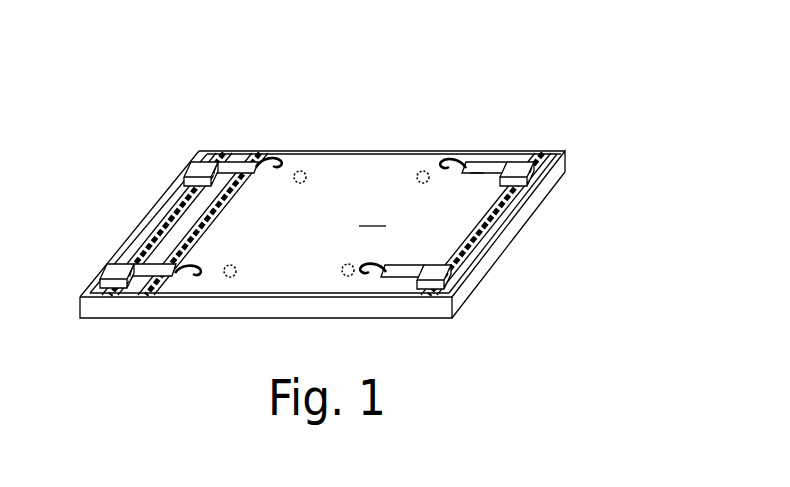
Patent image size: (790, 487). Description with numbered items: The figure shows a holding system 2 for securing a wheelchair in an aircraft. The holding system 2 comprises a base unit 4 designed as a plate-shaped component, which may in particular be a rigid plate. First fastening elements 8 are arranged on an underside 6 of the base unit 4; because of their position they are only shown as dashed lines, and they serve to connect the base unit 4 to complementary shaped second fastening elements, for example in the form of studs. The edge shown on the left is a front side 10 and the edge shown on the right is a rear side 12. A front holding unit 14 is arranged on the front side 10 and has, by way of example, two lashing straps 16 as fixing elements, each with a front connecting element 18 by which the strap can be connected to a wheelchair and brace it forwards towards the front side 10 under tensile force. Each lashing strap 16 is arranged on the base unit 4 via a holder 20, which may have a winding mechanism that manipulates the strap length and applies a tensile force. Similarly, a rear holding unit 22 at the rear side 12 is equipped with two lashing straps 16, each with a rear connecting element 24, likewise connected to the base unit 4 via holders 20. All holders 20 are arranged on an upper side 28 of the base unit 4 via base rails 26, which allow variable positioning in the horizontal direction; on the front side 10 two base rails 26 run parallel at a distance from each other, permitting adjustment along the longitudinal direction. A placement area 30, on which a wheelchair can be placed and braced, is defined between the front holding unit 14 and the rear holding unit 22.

The holding system 2 is at (440, 88).
The base unit 4 is at (335, 163).
The underside 6 is at (126, 324).
The first fastening elements 8 is at (238, 270).
The front side 10 is at (127, 198).
The rear side 12 is at (524, 244).
The front holding unit 14 is at (172, 162).
The lashing straps 16 is at (236, 163).
The front connecting element 18 is at (280, 148).
The holder 20 is at (196, 160).
The rear holding unit 22 is at (477, 186).
The rear connecting element 24 is at (457, 150).
The base rails 26 is at (133, 262).
The upper side 28 is at (379, 160).
The placement area 30 is at (371, 213).